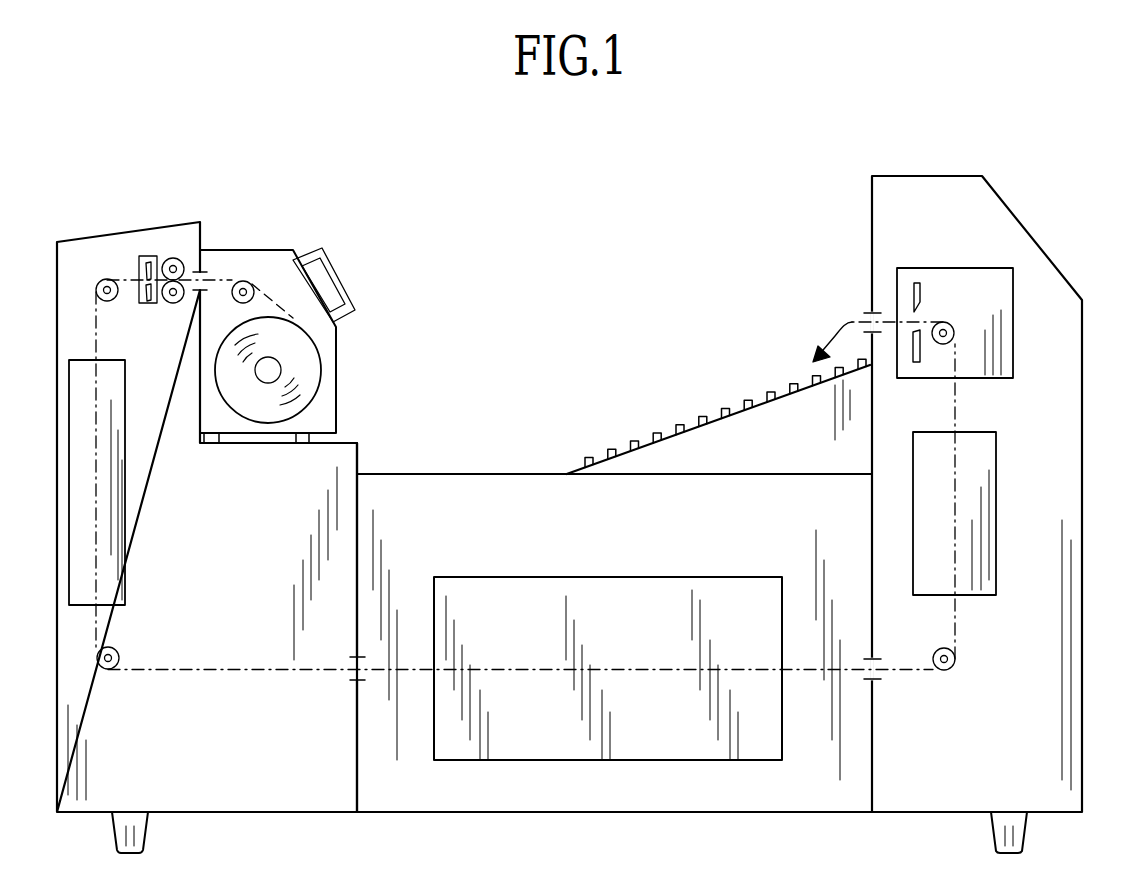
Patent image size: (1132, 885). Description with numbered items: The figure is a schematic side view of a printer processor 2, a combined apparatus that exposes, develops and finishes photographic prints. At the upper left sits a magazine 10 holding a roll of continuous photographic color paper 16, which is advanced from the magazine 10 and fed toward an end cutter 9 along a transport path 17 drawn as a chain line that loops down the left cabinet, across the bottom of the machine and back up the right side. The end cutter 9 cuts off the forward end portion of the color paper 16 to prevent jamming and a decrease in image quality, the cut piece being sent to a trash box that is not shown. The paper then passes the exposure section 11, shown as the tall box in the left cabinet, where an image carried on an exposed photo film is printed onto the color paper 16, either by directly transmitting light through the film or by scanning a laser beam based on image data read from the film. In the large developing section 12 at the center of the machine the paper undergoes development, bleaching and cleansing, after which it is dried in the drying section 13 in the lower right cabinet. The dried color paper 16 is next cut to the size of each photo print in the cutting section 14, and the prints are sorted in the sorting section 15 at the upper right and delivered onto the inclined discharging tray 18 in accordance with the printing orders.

The printer processor 2 is at (628, 272).
The end cutter 9 is at (148, 305).
The magazine 10 is at (246, 249).
The exposure section 11 is at (126, 481).
The developing section 12 is at (609, 577).
The drying section 13 is at (983, 596).
The cutting section 14 is at (913, 287).
The sorting section 15 is at (954, 268).
The color paper 16 is at (303, 367).
The transport path 17 is at (957, 405).
The discharging tray 18 is at (727, 409).